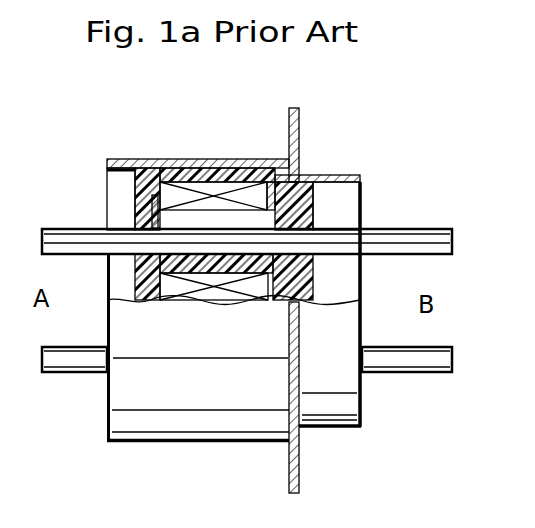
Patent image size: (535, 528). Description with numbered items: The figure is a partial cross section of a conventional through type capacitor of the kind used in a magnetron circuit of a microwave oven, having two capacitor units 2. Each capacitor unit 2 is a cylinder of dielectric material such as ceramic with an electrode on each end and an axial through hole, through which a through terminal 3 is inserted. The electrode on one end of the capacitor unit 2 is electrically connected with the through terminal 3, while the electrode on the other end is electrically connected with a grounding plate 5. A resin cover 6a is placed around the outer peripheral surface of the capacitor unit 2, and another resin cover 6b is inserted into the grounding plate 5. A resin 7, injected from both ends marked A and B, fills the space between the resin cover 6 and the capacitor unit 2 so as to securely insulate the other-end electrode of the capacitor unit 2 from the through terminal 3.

The capacitor unit 2 is at (235, 195).
The through terminal 3 is at (432, 247).
The grounding plate 5 is at (299, 122).
The resin cover 6 is at (198, 420).
The resin cover 6a is at (167, 159).
The resin cover 6b is at (358, 178).
The resin 7 is at (142, 188).